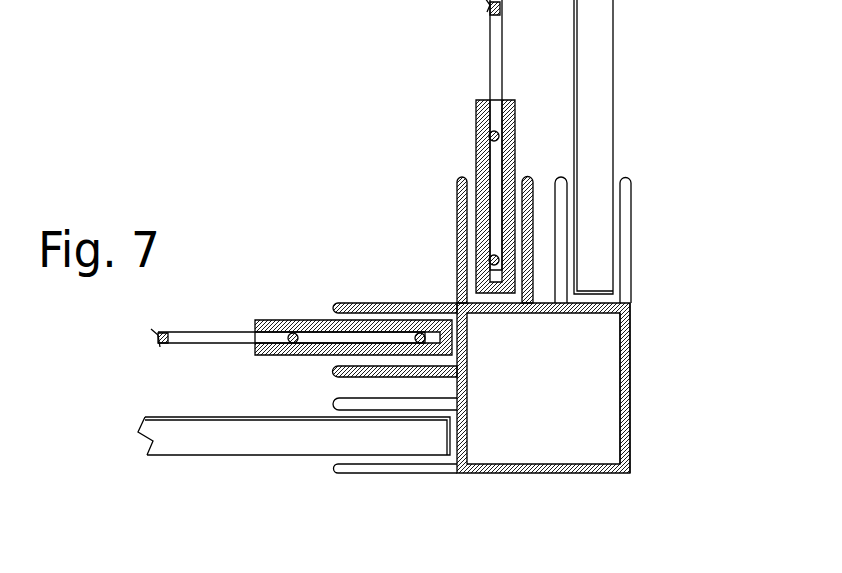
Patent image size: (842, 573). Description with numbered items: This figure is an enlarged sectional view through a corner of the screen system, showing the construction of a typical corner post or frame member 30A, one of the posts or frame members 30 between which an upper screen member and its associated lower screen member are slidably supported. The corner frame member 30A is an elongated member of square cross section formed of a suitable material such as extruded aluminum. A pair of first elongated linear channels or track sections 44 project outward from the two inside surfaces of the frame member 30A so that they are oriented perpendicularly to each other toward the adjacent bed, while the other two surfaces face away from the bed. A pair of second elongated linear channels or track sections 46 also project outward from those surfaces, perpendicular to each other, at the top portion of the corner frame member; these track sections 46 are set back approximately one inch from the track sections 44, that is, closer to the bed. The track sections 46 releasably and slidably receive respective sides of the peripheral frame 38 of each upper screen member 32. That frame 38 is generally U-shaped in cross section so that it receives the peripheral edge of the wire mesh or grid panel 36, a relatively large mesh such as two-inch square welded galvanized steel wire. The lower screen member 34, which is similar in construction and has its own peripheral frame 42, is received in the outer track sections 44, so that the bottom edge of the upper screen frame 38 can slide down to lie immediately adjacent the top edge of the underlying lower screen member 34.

The post or frame member 30 is at (552, 473).
The corner post or frame member 30A is at (632, 403).
The upper screen member 32 is at (173, 332).
The lower screen member 34 is at (303, 432).
The wire mesh or grid panel 36 is at (230, 335).
The peripheral frame 38 is at (294, 324).
The peripheral frame 42 is at (188, 440).
The first track section 44 is at (398, 473).
The second track section 46 is at (368, 302).